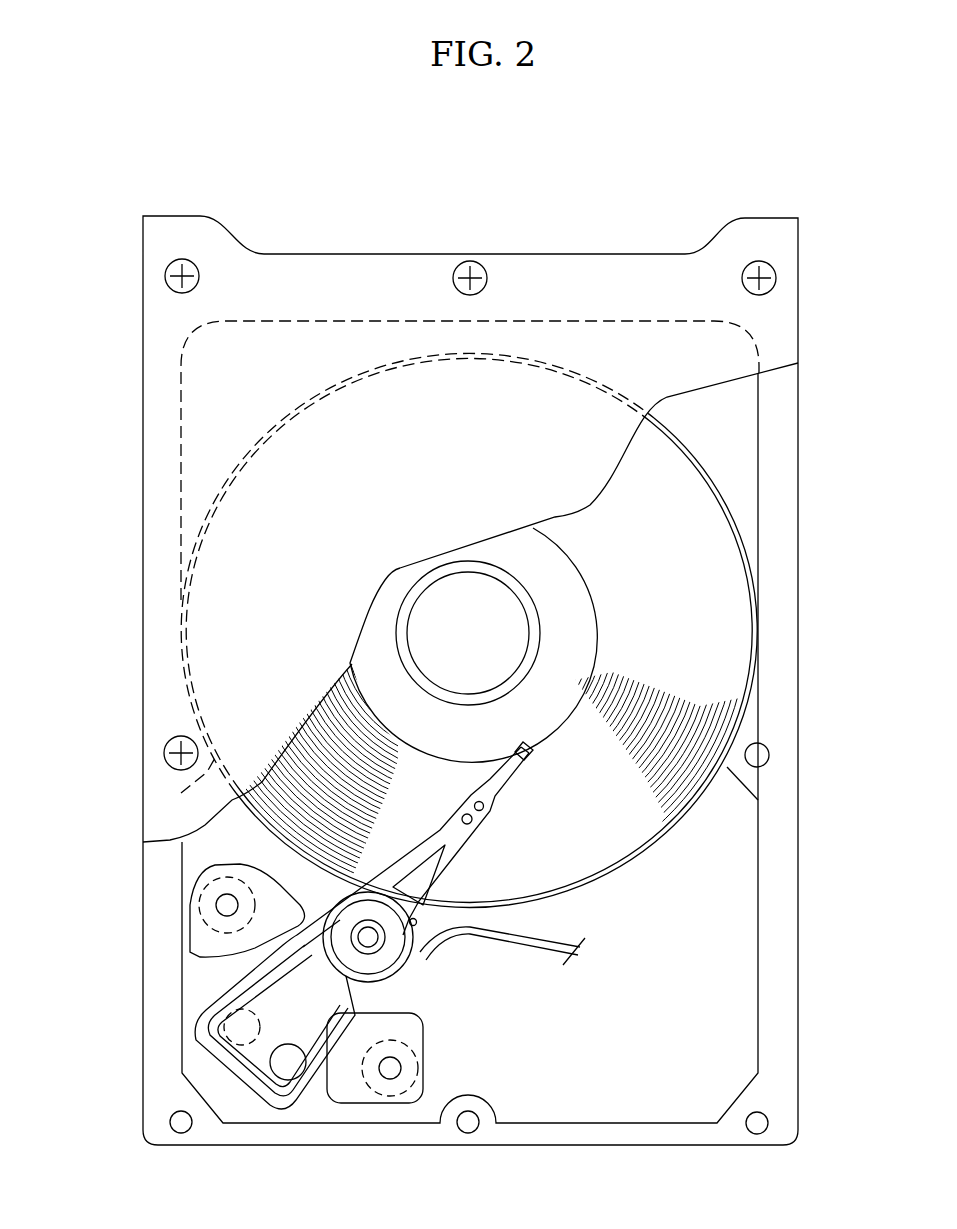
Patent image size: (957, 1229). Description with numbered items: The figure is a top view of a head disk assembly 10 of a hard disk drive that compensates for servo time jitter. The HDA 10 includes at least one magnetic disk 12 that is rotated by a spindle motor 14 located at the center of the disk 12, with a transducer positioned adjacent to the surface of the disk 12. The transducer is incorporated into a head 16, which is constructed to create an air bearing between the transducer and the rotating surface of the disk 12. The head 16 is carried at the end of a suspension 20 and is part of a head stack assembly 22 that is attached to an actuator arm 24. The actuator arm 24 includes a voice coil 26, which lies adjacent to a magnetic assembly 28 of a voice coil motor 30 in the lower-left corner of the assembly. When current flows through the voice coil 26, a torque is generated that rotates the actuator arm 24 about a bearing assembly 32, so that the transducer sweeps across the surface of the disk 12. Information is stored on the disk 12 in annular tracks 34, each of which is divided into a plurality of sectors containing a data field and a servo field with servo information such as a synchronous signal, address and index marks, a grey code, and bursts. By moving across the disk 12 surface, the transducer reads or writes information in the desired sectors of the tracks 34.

The head disk assembly 10 is at (640, 197).
The magnetic disk 12 is at (716, 572).
The spindle motor 14 is at (447, 610).
The head 16 is at (529, 758).
The suspension 20 is at (505, 780).
The head stack assembly 22 is at (472, 865).
The actuator arm 24 is at (285, 960).
The voice coil 26 is at (213, 1020).
The magnetic assembly 28 is at (227, 968).
The voice coil motor 30 is at (340, 1083).
The bearing assembly 32 is at (378, 950).
The annular tracks 34 is at (335, 747).